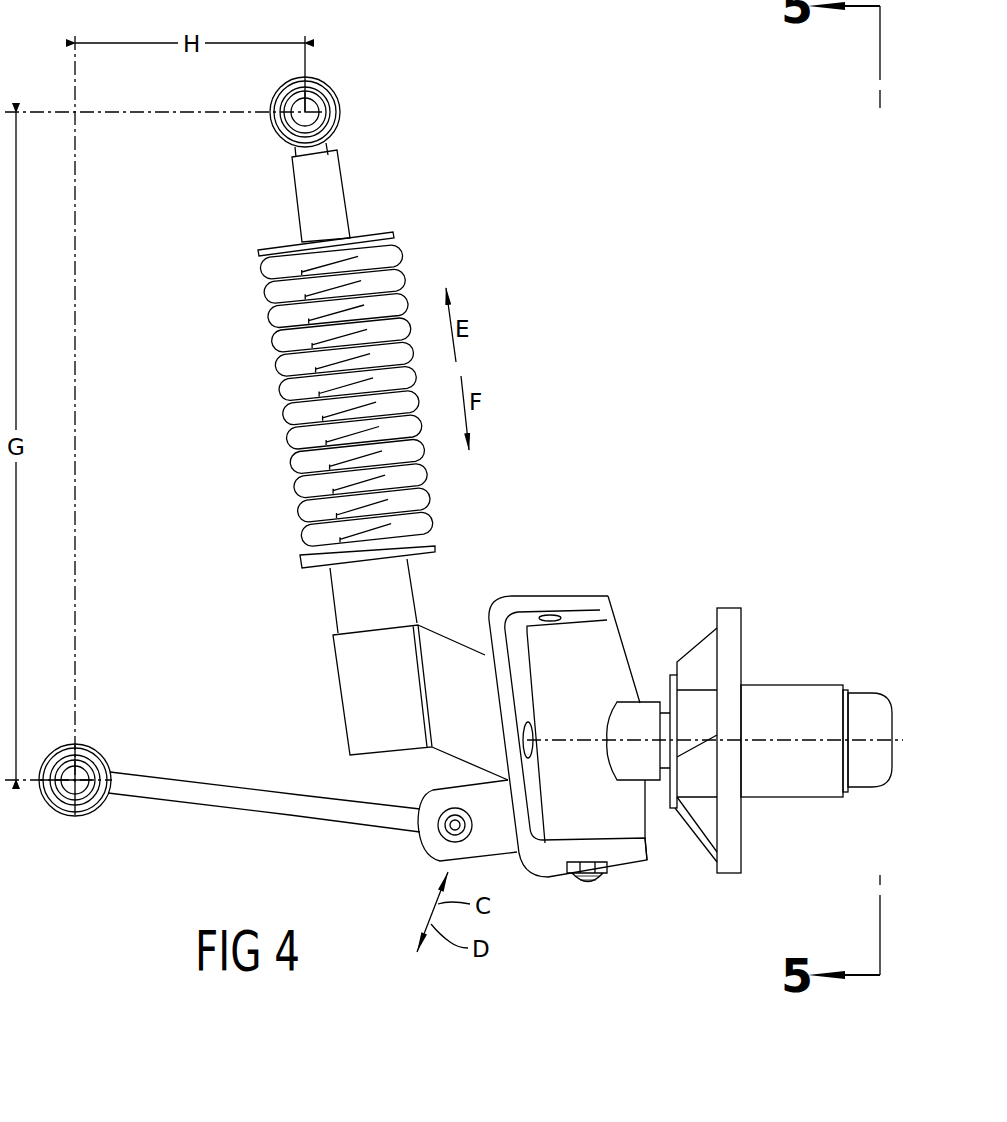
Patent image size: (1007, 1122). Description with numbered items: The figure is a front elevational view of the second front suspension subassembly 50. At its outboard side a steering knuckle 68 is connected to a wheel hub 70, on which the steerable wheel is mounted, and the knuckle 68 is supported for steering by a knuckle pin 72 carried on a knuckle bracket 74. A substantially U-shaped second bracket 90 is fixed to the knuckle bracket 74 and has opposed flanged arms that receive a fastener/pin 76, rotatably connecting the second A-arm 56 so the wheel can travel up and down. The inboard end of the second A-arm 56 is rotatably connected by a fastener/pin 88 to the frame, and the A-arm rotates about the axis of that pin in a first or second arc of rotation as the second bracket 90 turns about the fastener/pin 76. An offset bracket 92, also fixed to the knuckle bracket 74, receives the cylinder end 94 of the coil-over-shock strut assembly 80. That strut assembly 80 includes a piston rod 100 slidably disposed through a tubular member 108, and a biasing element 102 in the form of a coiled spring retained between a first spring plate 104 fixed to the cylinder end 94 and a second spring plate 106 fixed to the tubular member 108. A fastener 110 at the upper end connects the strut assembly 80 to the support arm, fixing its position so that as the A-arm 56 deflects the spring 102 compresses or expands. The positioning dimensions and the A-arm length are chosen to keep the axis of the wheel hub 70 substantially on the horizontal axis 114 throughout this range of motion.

The second front suspension subassembly 50 is at (503, 171).
The second A-arm 56 is at (300, 814).
The steering knuckle 68 is at (643, 717).
The wheel hub 70 is at (767, 780).
The knuckle pin 72 is at (590, 885).
The knuckle bracket 74 is at (603, 600).
The fastener/pin 76 is at (455, 826).
The coil-over-shock strut assembly 80 is at (226, 358).
The fastener/pin 88 is at (88, 808).
The second bracket 90 is at (440, 800).
The offset bracket 92 is at (358, 718).
The cylinder end 94 is at (348, 591).
The piston rod 100 is at (330, 288).
The biasing element 102 is at (305, 442).
The first spring plate 104 is at (434, 551).
The second spring plate 106 is at (368, 238).
The tubular member 108 is at (333, 200).
The fastener 110 is at (330, 95).
The horizontal axis 114 is at (772, 738).